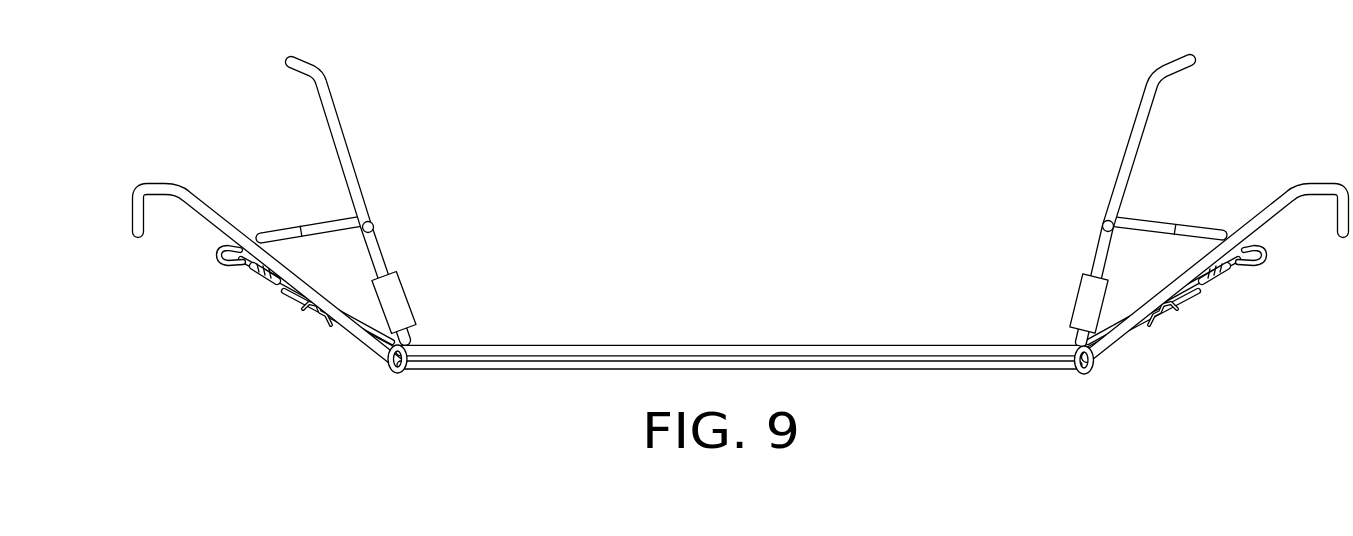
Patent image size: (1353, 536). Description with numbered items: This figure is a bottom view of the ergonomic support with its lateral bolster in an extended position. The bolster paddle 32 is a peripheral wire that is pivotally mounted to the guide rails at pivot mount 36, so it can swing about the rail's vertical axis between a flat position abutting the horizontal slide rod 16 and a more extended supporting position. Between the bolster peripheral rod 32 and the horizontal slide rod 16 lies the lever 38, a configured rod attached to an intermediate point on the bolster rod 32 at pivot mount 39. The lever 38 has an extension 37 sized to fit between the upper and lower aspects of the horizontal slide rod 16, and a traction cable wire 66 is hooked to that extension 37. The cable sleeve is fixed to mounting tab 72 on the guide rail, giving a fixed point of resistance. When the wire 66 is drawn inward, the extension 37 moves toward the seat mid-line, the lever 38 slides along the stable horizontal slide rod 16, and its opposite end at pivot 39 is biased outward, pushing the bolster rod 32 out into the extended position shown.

The horizontal slide rod 16 is at (1272, 207).
The bolster paddle 32 is at (312, 70).
The pivot mount 36 is at (405, 362).
The extension 37 is at (228, 252).
The lever 38 is at (278, 238).
The pivot mount 39 is at (378, 226).
The traction cable wire 66 is at (277, 283).
The mounting tab 72 is at (357, 312).